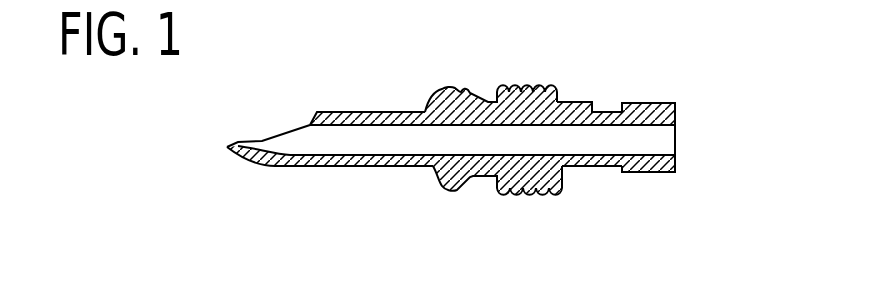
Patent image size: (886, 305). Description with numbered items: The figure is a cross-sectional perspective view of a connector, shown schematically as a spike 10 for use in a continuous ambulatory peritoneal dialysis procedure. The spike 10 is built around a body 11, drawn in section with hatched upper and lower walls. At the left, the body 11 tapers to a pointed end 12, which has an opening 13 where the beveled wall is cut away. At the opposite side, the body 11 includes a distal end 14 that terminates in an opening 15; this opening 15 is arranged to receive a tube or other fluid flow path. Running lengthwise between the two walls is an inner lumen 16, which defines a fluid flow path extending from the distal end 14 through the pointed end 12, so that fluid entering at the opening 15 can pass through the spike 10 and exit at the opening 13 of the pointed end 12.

The spike 10 is at (333, 176).
The body 11 is at (426, 111).
The pointed end 12 is at (228, 148).
The opening 13 is at (285, 133).
The distal end 14 is at (674, 104).
The opening 15 is at (673, 135).
The inner lumen 16 is at (578, 146).